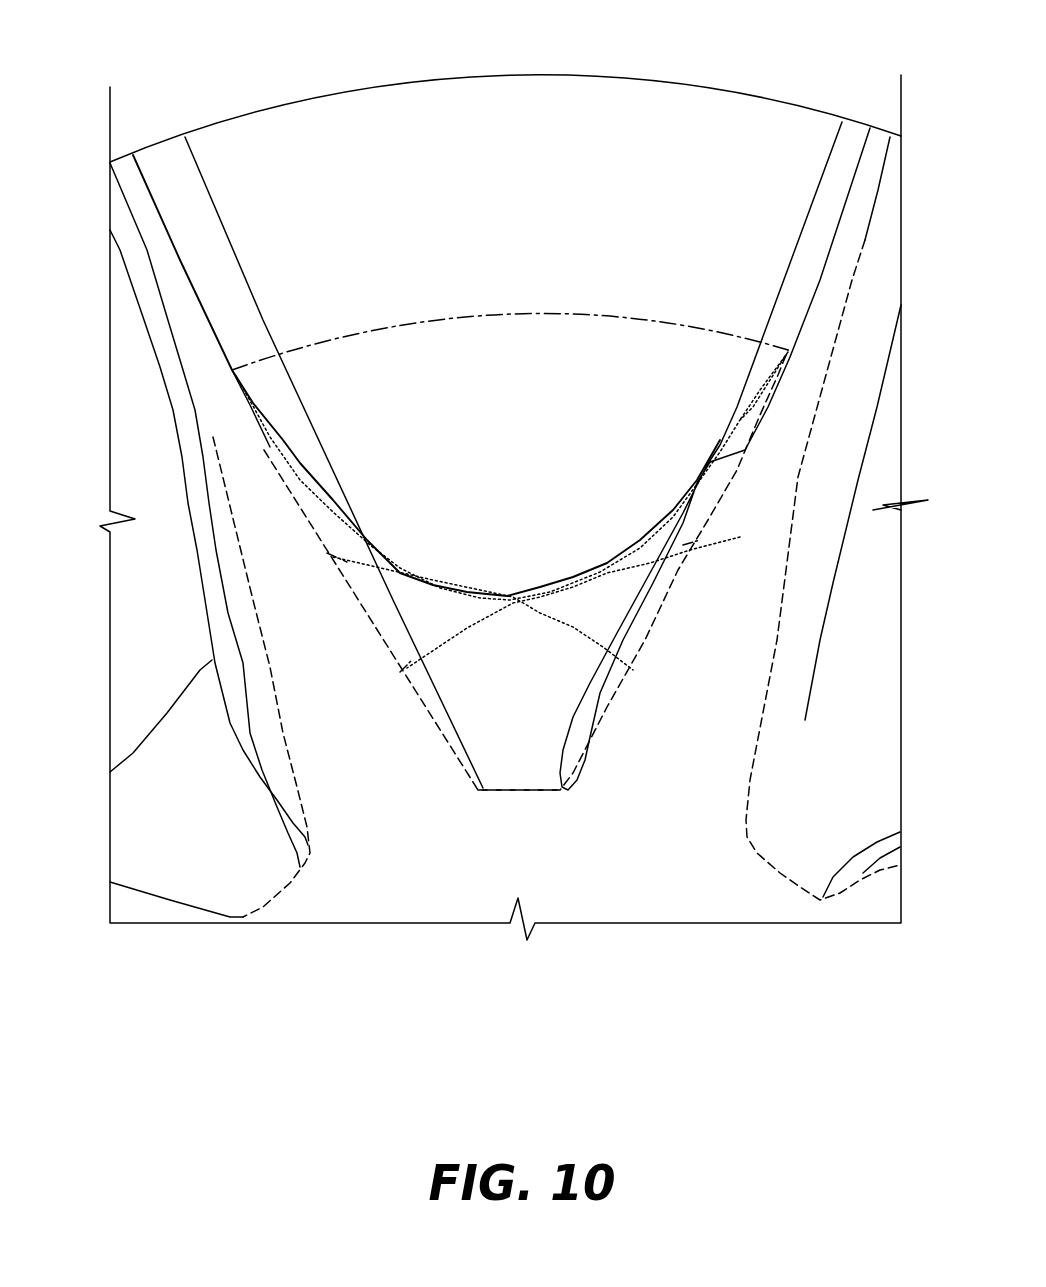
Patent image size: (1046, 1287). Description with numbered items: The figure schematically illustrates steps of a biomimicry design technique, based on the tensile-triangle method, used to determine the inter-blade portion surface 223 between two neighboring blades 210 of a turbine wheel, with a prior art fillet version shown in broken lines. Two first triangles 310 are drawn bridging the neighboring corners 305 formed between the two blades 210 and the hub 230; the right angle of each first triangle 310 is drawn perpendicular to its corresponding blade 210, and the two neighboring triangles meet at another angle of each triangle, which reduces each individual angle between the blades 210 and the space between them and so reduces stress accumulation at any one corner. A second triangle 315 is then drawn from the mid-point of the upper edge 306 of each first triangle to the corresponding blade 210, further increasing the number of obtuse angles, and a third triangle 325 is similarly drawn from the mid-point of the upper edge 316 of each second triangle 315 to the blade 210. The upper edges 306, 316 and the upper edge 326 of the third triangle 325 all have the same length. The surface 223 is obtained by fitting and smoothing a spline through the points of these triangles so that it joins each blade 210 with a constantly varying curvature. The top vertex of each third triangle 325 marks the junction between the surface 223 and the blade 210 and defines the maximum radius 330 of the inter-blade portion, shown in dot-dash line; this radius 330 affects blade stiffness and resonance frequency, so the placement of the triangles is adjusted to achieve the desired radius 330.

The blade 210 is at (499, 494).
The inter-blade portion surface 223 is at (384, 375).
The hub 230 is at (505, 841).
The corner 305 is at (620, 914).
The upper edge 306 is at (682, 604).
The first triangle 310 is at (425, 794).
The second triangle 315 is at (507, 578).
The upper edge 316 is at (575, 463).
The third triangle 325 is at (505, 476).
The upper edge 326 is at (852, 364).
The maximum radius 330 is at (499, 203).